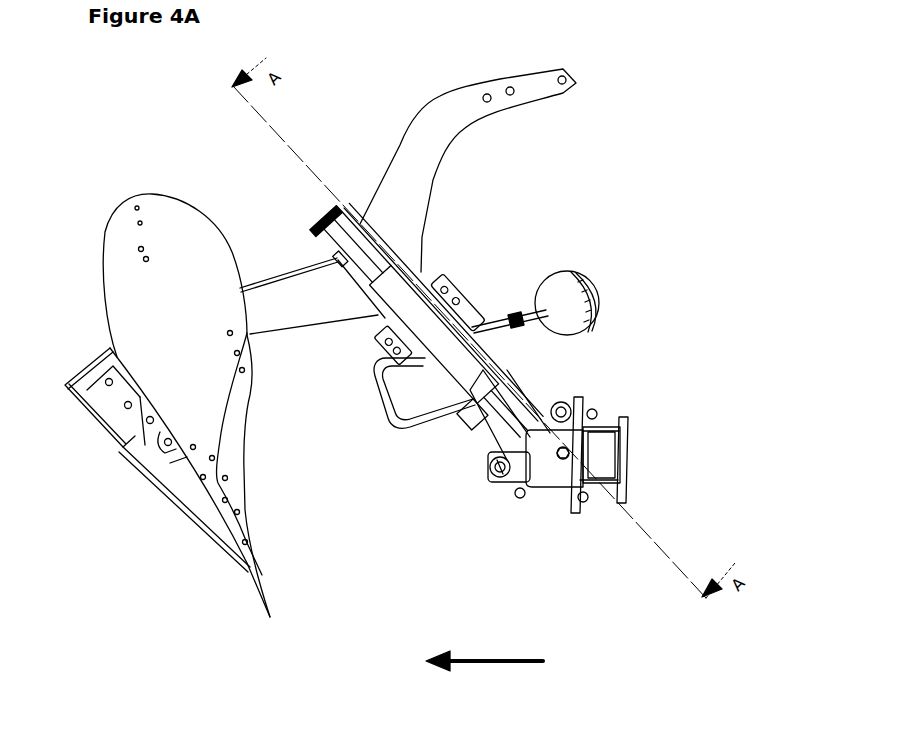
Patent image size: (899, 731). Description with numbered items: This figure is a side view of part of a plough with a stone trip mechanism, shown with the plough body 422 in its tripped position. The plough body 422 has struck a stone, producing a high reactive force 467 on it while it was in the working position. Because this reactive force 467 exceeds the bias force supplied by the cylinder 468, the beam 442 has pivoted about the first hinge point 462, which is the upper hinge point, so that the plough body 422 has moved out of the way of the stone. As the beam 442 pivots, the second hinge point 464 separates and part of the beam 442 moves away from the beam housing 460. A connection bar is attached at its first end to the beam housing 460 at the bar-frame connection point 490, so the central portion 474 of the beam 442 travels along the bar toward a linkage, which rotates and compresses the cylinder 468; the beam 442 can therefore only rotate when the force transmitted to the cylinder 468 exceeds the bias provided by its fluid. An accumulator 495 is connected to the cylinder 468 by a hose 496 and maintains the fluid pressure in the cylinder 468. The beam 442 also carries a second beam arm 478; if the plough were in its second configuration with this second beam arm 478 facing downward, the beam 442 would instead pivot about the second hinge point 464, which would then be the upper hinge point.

The plough body 422 is at (116, 287).
The beam 442 is at (462, 438).
The beam housing 460 is at (607, 423).
The first hinge point 462 is at (566, 410).
The second hinge point 464 is at (503, 478).
The reactive force 467 is at (524, 663).
The cylinder 468 is at (403, 288).
The central portion 474 is at (380, 323).
The second beam arm 478 is at (442, 105).
The bar-frame connection point 490 is at (572, 458).
The accumulator 495 is at (590, 287).
The hose 496 is at (374, 405).